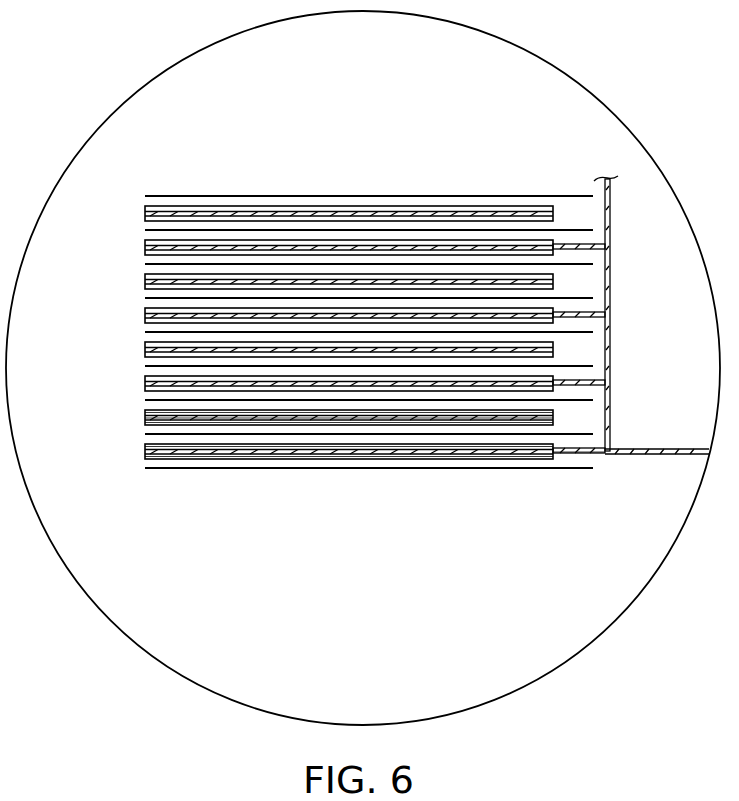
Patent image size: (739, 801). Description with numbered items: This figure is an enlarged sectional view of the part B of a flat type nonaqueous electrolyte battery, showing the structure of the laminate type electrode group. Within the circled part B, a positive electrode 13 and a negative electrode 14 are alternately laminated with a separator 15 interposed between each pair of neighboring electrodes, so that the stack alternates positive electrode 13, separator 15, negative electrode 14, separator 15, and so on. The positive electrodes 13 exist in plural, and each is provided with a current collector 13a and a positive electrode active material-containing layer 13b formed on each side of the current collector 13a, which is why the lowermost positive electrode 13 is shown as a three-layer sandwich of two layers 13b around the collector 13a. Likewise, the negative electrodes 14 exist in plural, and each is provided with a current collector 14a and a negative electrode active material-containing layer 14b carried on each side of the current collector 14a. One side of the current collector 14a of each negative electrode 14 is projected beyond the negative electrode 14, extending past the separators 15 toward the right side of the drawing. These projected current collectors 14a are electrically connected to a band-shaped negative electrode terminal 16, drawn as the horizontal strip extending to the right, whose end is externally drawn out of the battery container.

The positive electrode 13 is at (58, 479).
The current collector 13a is at (146, 418).
The positive electrode active material-containing layer 13b is at (147, 412).
The negative electrode 14 is at (127, 557).
The current collector 14a is at (583, 248).
The negative electrode active material-containing layer 14b is at (150, 447).
The separator 15 is at (427, 194).
The band-shaped negative electrode terminal 16 is at (655, 456).
The part B is at (610, 627).